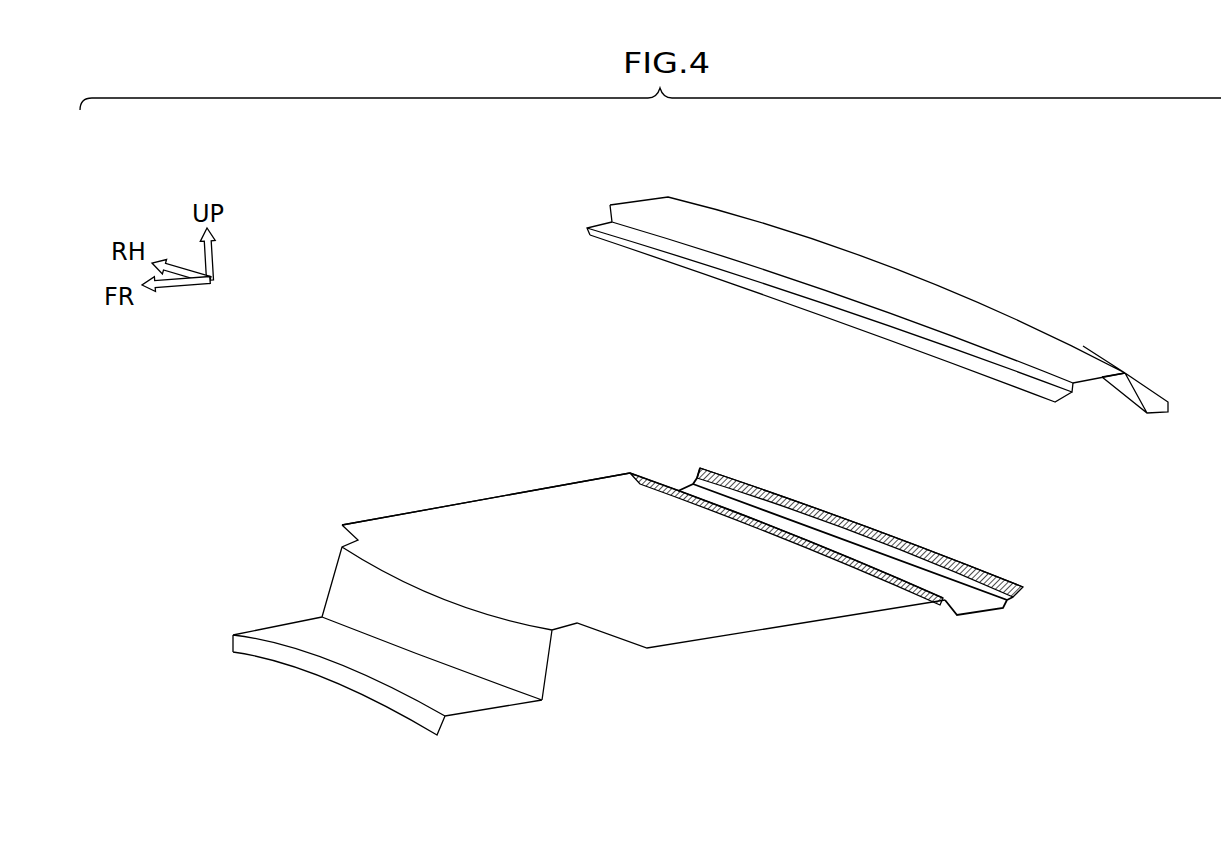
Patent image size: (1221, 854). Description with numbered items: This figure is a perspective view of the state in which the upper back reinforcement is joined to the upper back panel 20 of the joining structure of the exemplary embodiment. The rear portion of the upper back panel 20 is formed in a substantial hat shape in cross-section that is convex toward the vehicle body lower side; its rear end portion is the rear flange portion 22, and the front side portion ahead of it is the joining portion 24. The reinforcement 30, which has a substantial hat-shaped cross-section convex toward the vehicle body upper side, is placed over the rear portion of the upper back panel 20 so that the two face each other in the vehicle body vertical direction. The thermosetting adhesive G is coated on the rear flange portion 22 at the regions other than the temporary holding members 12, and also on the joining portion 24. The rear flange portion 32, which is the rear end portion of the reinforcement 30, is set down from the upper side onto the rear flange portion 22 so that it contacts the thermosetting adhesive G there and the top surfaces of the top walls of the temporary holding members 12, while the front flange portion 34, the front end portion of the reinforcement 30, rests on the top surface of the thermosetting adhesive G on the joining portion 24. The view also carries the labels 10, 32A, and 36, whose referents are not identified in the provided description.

The roof structure 10 is at (650, 544).
The temporary holding member 12 is at (722, 468).
The upper back panel 20 is at (444, 500).
The rear flange portion 22 is at (940, 553).
The joining portion 24 is at (648, 476).
The reinforcement 30 is at (835, 326).
The rear flange portion 32 is at (1156, 410).
The inclined surface 32A is at (1163, 388).
The front flange portion 34 is at (607, 227).
The top surface 36 is at (755, 240).
The thermosetting adhesive G is at (890, 530).